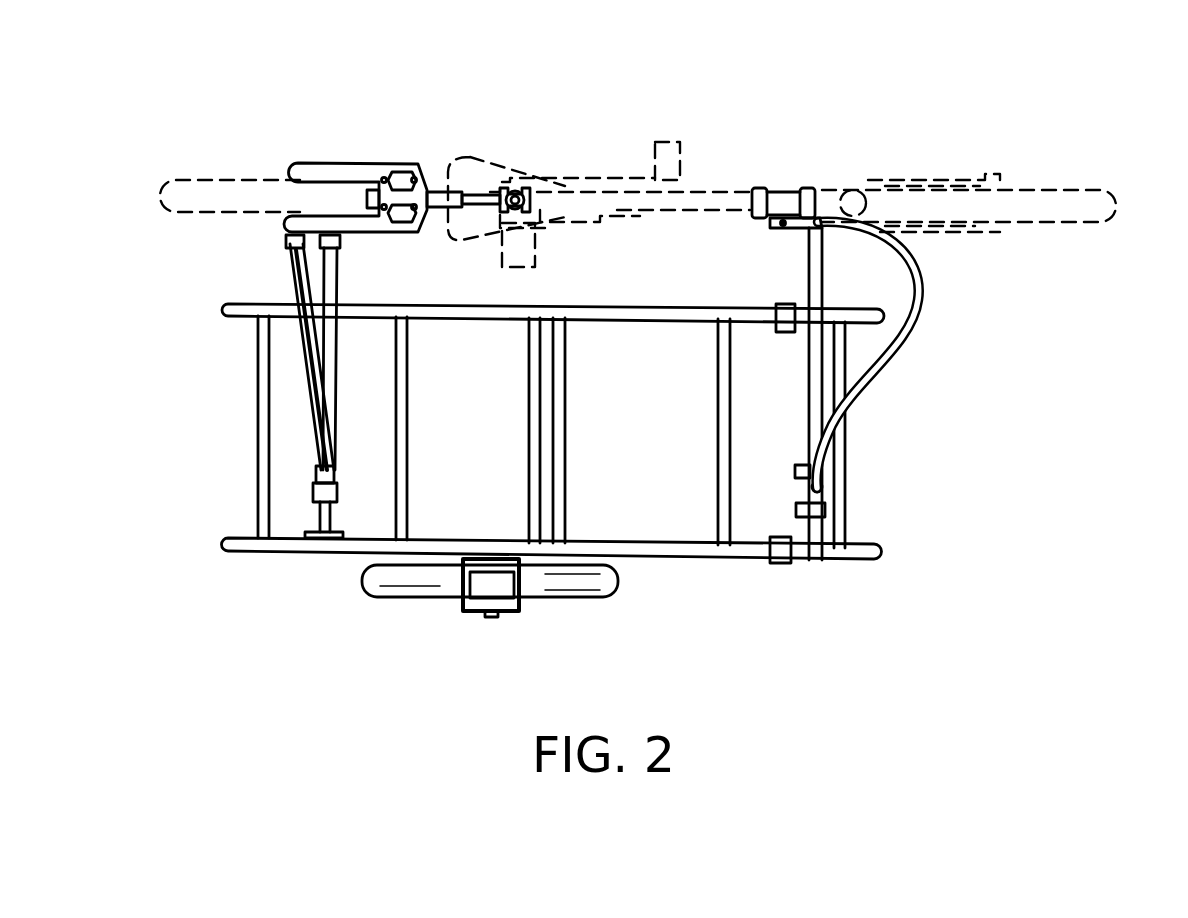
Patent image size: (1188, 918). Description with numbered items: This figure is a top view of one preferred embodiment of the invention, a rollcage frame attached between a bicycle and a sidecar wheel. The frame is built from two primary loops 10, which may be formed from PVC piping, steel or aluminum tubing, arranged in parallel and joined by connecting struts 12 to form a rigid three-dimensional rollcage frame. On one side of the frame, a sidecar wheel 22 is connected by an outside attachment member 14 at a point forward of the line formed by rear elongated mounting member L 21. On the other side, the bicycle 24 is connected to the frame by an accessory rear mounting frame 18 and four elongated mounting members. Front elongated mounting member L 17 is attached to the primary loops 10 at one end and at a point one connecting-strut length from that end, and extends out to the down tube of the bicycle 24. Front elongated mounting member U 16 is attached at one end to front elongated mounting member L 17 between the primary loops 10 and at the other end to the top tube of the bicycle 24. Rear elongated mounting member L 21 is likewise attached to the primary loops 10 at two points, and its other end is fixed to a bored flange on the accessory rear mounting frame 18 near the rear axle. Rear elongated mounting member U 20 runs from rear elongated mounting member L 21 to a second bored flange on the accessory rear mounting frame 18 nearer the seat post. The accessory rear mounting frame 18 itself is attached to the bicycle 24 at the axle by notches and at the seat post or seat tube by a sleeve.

The primary loop 10 is at (232, 306).
The connecting strut 12 is at (262, 440).
The outside attachment member 14 is at (470, 618).
The front elongated mounting member U 16 is at (913, 305).
The front elongated mounting member L 17 is at (813, 380).
The accessory rear mounting frame 18 is at (402, 158).
The rear elongated mounting member U 20 is at (305, 297).
The rear elongated mounting member L 21 is at (330, 280).
The sidecar wheel 22 is at (403, 580).
The bicycle 24 is at (1043, 192).